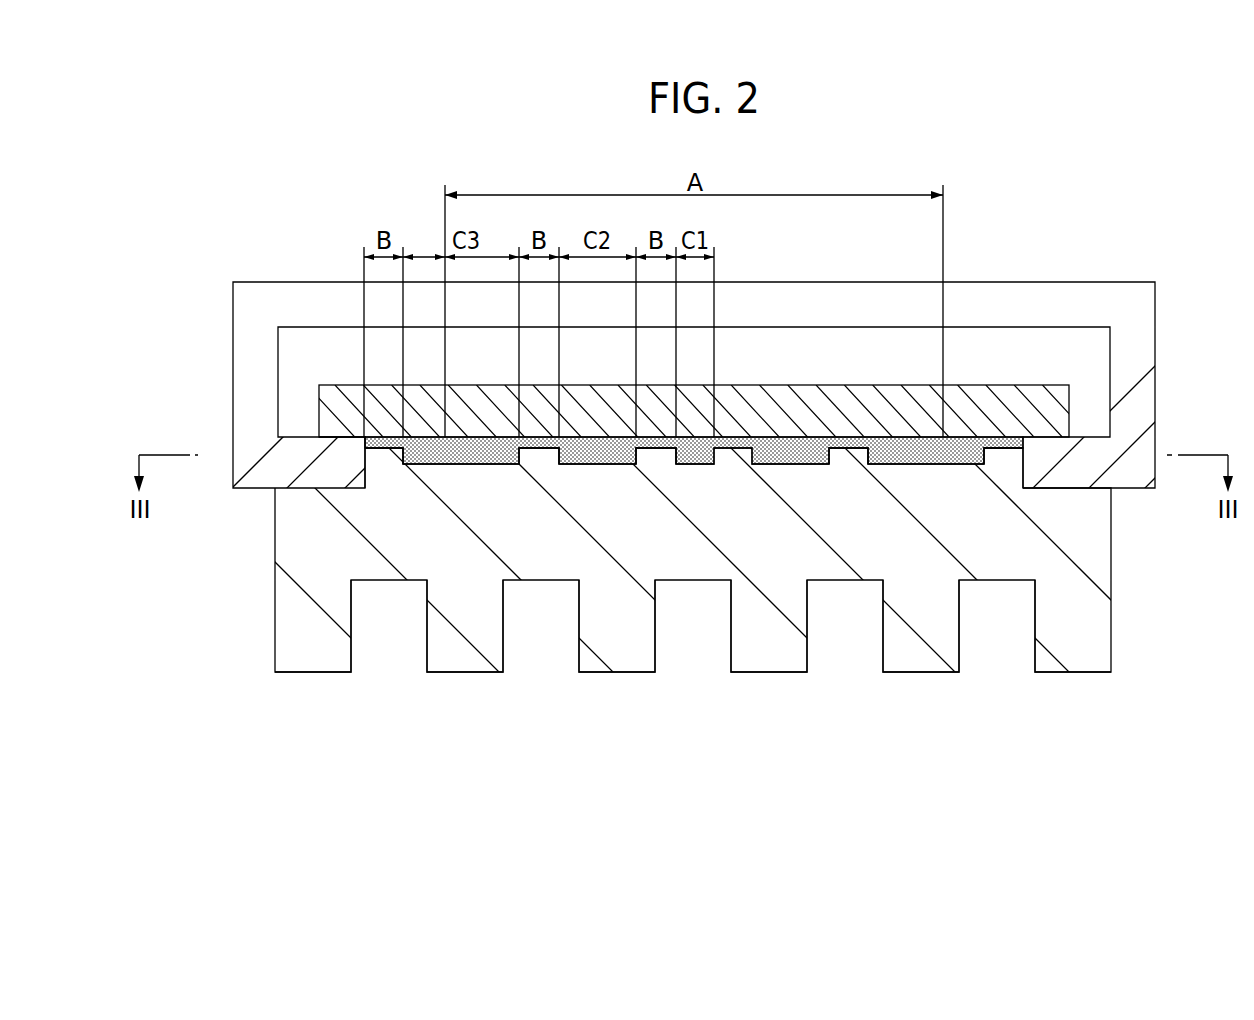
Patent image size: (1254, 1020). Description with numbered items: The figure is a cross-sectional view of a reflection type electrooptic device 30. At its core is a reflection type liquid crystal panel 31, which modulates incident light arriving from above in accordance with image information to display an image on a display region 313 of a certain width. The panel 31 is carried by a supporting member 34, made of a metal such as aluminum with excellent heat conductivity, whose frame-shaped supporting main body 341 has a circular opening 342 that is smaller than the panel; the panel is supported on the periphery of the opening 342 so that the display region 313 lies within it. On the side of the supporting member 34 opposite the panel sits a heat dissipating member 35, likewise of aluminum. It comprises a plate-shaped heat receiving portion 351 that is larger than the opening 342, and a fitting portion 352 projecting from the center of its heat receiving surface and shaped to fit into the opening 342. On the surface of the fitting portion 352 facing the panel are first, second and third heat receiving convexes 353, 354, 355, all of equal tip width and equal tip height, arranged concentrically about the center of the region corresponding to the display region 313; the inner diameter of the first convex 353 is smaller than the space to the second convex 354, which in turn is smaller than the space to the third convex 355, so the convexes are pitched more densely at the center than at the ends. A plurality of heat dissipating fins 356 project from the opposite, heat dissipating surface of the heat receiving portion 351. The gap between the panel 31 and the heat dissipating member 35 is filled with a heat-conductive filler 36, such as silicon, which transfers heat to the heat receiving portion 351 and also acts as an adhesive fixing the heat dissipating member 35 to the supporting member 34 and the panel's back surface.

The reflection type electrooptic device 30 is at (1060, 137).
The reflection type liquid crystal panel 31 is at (706, 329).
The display region 313 is at (805, 398).
The supporting member 34 is at (709, 390).
The supporting main body 341 is at (246, 382).
The opening 342 is at (368, 463).
The heat dissipating member 35 is at (672, 496).
The heat receiving portion 351 is at (1018, 556).
The fitting portion 352 is at (1020, 482).
The first heat receiving convex 353 is at (650, 447).
The second heat receiving convex 354 is at (846, 455).
The third heat receiving convex 355 is at (991, 447).
The heat dissipating fins 356 is at (1083, 658).
The filler 36 is at (726, 452).